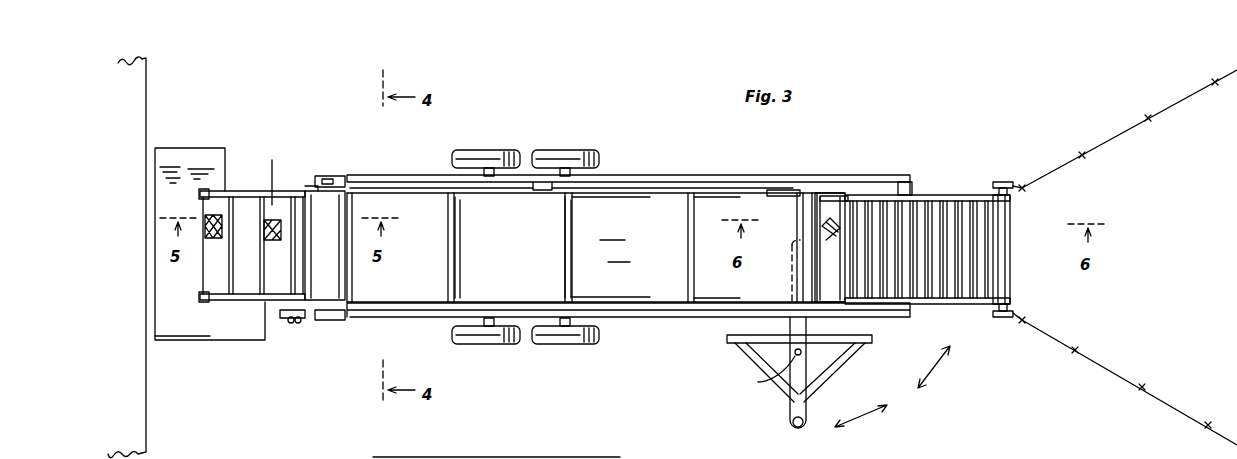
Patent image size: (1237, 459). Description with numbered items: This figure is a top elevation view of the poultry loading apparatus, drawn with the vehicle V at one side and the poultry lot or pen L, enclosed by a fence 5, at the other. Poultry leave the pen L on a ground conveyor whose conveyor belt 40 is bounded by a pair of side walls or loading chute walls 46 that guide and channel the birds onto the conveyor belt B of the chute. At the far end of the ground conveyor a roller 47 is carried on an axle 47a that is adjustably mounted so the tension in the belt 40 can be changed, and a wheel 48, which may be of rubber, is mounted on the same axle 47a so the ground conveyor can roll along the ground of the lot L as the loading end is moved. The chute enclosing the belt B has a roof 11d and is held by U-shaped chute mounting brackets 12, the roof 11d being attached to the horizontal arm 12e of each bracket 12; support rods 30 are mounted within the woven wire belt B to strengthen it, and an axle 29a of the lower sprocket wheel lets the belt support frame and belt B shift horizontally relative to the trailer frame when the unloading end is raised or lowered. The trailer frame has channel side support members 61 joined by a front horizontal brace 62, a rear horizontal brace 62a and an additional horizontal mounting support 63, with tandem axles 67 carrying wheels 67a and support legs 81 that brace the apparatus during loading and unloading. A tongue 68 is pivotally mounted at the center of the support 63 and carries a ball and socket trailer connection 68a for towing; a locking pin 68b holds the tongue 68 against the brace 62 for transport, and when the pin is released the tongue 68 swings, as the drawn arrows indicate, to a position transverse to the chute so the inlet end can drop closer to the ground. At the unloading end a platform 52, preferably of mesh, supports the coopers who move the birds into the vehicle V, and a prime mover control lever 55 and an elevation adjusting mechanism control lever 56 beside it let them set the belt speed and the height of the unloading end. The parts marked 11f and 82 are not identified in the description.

The vehicle V is at (148, 407).
The platform 52 is at (212, 325).
The end conveyor frame section 11f is at (250, 236).
The support rods 30 is at (238, 243).
The conveyor belt B is at (826, 210).
The U-shaped chute mounting bracket 12 is at (306, 258).
The side support member 61 is at (622, 179).
The roof 11d is at (618, 458).
The horizontal arm 12e is at (478, 455).
The wheels 67a is at (550, 150).
The axles 67 is at (487, 177).
The mounting plate 82 is at (345, 178).
The support leg 81 is at (328, 178).
The rear horizontal brace 62a is at (305, 187).
The prime mover control lever 55 is at (288, 318).
The elevation adjusting mechanism control lever 56 is at (293, 324).
The horizontal mounting support 63 is at (800, 190).
The axle of lower sprocket wheel 29a is at (846, 195).
The front horizontal brace 62 is at (905, 190).
The loading chute wall 46 is at (932, 197).
The conveyor belt of ground conveyor 40 is at (990, 249).
The wheel 48 is at (1000, 182).
The axle 47a is at (1018, 196).
The roller 47 is at (1012, 303).
The fence 5 is at (1173, 103).
The poultry lot or pen L is at (1210, 243).
The tongue 68 is at (803, 375).
The ball and socket trailer connection 68a is at (790, 424).
The locking pin 68b is at (758, 382).